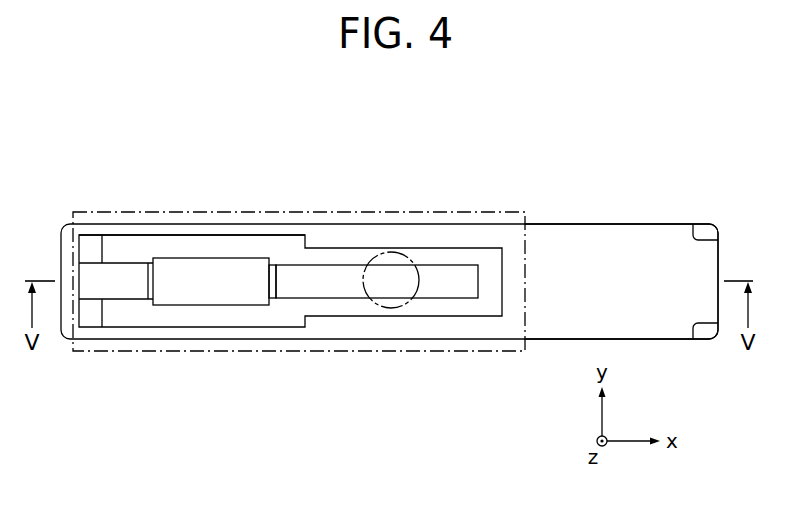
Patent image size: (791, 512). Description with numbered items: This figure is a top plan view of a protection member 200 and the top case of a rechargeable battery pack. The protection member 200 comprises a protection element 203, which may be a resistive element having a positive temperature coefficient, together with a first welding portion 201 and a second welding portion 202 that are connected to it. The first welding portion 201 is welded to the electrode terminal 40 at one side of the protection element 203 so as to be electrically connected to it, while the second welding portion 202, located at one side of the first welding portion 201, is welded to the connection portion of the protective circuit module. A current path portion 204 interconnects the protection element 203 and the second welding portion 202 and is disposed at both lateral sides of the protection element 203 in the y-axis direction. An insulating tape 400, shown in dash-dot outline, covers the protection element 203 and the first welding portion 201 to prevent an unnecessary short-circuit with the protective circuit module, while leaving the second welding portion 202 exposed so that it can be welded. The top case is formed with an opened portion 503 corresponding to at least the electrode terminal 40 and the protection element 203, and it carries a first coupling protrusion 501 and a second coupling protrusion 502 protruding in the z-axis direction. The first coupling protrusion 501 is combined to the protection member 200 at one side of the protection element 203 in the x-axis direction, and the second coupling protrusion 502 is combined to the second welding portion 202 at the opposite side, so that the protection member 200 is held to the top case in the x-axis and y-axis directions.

The protection member 200 is at (148, 216).
The insulating tape 400 is at (323, 212).
The opened portion 503 is at (222, 327).
The current path portion 204 is at (267, 230).
The second welding portion 202 is at (605, 240).
The first coupling protrusion 501 is at (92, 248).
The protection element 203 is at (195, 270).
The first welding portion 201 is at (453, 275).
The electrode terminal 40 is at (388, 252).
The second coupling protrusion 502 is at (705, 232).